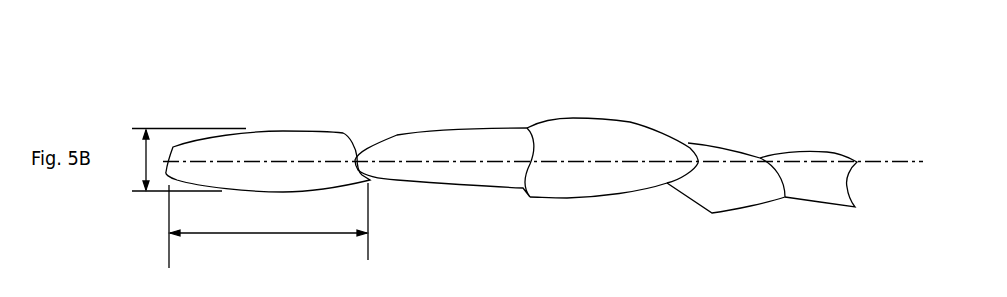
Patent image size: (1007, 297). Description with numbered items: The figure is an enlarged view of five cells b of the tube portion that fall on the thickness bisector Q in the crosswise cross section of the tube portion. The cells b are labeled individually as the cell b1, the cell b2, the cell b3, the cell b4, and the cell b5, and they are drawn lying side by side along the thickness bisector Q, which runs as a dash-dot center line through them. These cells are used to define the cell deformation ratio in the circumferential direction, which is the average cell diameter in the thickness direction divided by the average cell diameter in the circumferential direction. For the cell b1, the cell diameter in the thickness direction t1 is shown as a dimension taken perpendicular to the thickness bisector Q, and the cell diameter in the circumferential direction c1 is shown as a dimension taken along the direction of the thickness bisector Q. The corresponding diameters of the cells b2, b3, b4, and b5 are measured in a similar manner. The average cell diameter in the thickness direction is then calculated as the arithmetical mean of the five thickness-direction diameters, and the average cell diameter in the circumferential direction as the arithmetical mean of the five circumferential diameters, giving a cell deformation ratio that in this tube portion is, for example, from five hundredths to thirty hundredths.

The cell b is at (265, 123).
The first cell b1 is at (293, 129).
The second cell b2 is at (447, 130).
The third cell b3 is at (603, 118).
The fourth cell b4 is at (717, 143).
The fifth cell b5 is at (808, 150).
The cell diameter in the thickness direction t1 is at (181, 160).
The cell diameter in the circumferential direction c1 is at (268, 225).
The thickness bisector Q is at (554, 161).